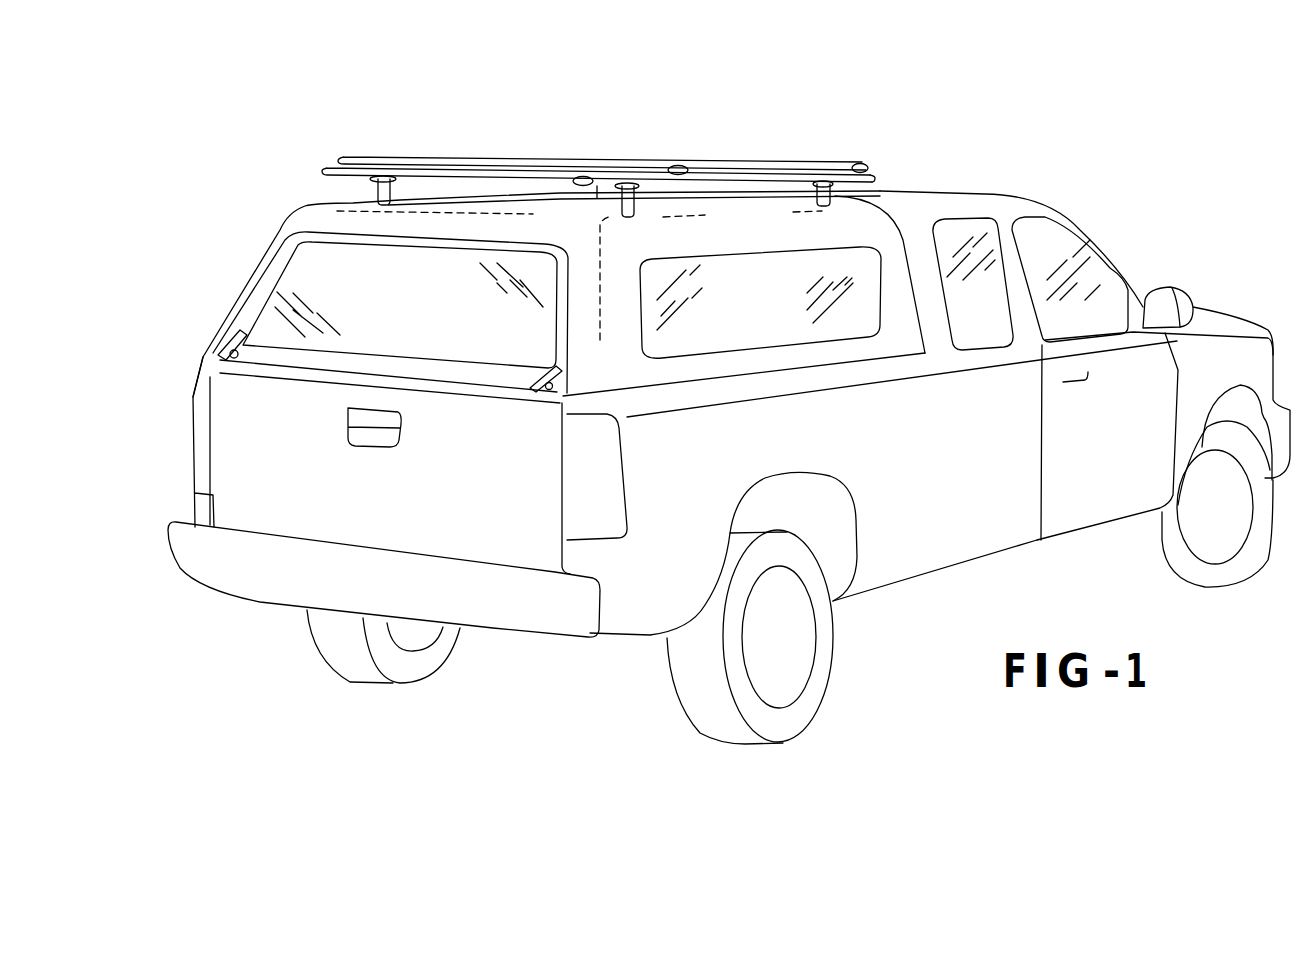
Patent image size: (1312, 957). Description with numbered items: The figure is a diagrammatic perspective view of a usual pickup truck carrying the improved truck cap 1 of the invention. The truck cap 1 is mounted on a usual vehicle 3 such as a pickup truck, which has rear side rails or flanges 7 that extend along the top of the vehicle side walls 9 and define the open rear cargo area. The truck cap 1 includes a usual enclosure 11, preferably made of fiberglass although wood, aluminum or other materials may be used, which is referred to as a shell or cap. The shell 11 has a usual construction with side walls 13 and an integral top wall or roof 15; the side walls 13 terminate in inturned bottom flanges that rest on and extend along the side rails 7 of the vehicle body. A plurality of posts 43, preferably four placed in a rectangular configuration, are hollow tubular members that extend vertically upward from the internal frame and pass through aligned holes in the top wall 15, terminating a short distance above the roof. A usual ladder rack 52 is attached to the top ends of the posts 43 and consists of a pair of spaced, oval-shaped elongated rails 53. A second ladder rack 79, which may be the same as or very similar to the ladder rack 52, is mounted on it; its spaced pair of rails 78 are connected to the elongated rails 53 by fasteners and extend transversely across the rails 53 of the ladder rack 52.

The truck cap 1 is at (242, 124).
The vehicle 3 is at (1012, 185).
The rear side rails 7 is at (787, 385).
The vehicle side walls 9 is at (798, 420).
The enclosure 11 is at (258, 231).
The side walls 13 is at (885, 265).
The top wall 15 is at (602, 168).
The posts 43 is at (380, 200).
The ladder rack 52 is at (882, 181).
The elongated rails 53 is at (366, 172).
The rails 78 is at (703, 167).
The second ladder rack 79 is at (875, 167).